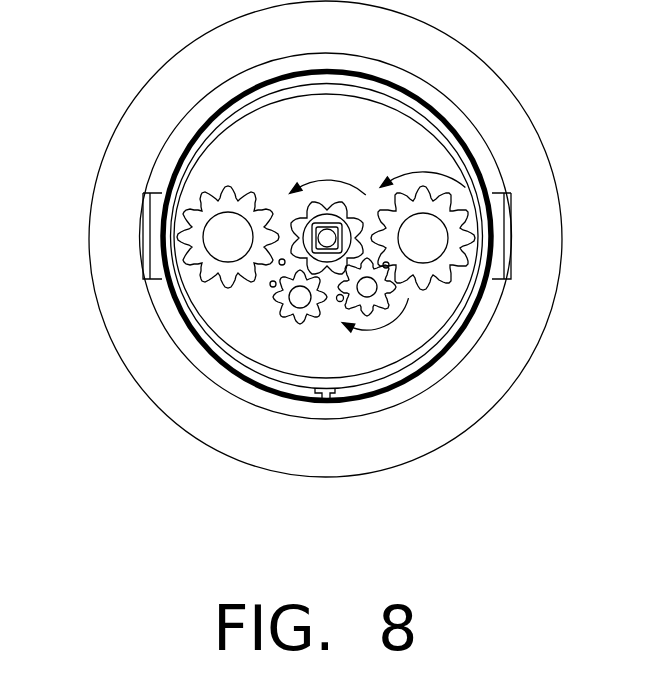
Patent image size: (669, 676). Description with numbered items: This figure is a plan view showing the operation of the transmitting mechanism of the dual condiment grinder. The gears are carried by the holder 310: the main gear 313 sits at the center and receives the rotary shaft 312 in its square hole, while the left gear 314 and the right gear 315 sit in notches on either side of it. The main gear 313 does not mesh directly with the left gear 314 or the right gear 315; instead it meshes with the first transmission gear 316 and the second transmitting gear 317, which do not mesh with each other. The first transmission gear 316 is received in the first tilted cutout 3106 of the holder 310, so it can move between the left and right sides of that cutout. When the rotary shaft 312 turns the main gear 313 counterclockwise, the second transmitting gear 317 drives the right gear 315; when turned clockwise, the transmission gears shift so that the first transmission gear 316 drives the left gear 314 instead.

The holder 310 is at (338, 300).
The rotary shaft 312 is at (338, 241).
The main gear 313 is at (283, 260).
The left gear 314 is at (215, 237).
The right gear 315 is at (438, 238).
The first transmission gear 316 is at (291, 314).
The second transmitting gear 317 is at (401, 292).
The first tilted cutout 3106 is at (272, 297).